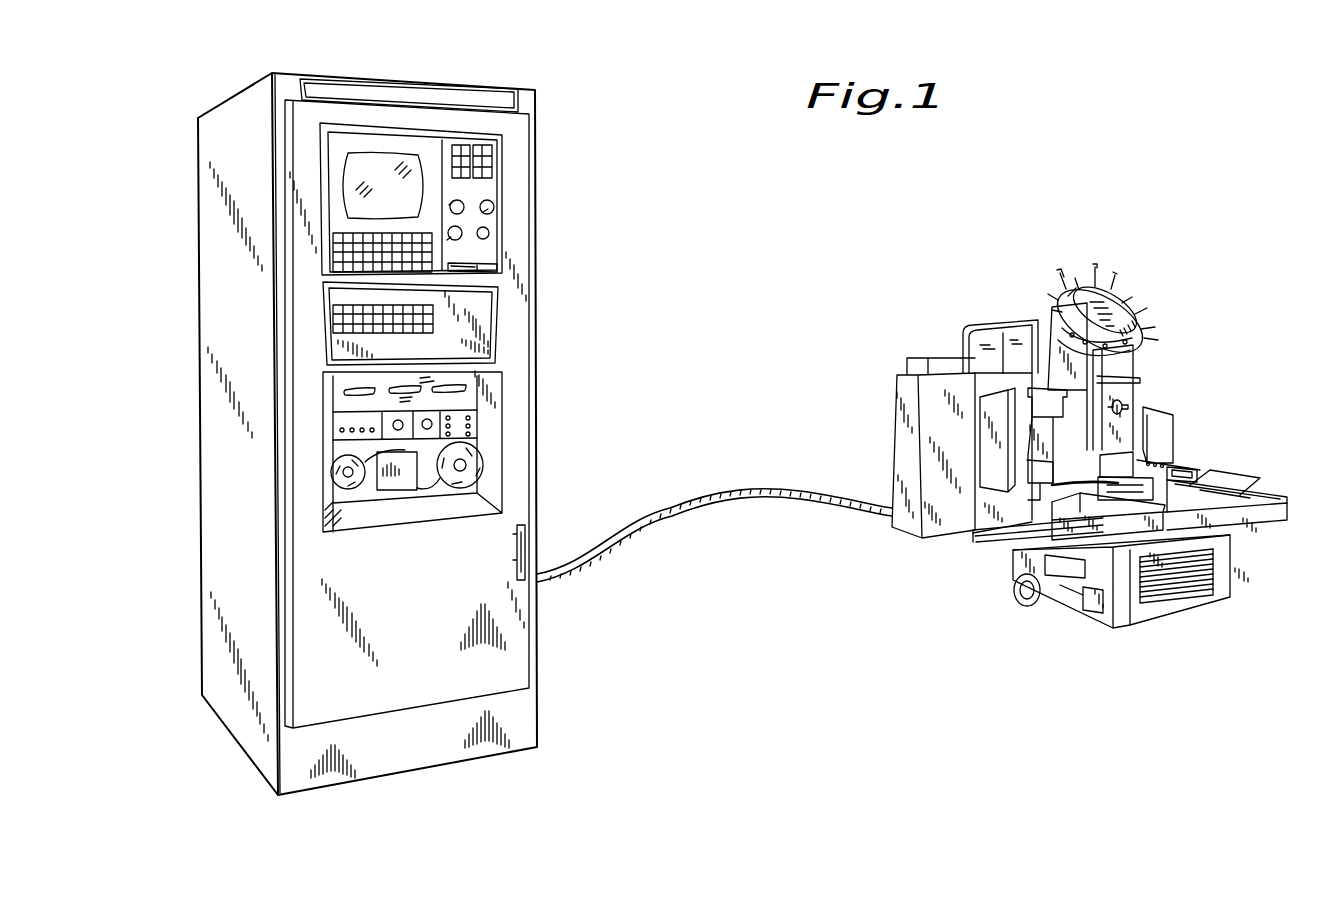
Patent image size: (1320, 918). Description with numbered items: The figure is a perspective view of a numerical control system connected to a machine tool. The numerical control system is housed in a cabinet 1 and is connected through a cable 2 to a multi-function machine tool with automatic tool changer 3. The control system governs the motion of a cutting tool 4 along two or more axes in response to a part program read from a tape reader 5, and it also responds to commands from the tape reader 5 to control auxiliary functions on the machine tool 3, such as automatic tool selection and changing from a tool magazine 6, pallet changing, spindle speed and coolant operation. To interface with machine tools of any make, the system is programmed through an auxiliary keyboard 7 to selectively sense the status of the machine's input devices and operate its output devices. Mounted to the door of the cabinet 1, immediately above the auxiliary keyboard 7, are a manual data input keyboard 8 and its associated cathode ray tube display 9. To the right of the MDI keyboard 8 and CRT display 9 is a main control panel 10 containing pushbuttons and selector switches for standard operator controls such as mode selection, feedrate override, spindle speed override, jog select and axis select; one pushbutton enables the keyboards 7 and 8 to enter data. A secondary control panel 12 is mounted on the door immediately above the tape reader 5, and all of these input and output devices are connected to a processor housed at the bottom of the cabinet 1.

The cabinet 1 is at (197, 244).
The cable 2 is at (718, 500).
The multi-function machine tool with automatic tool changer 3 is at (1207, 432).
The cutting tool 4 is at (1134, 407).
The tape reader 5 is at (468, 463).
The tool magazine 6 is at (1127, 293).
The auxiliary keyboard 7 is at (433, 315).
The manual data input (MDI) keyboard 8 is at (340, 251).
The cathode ray tube (CRT) display 9 is at (395, 157).
The main control panel 10 is at (493, 188).
The secondary control panel 12 is at (345, 418).